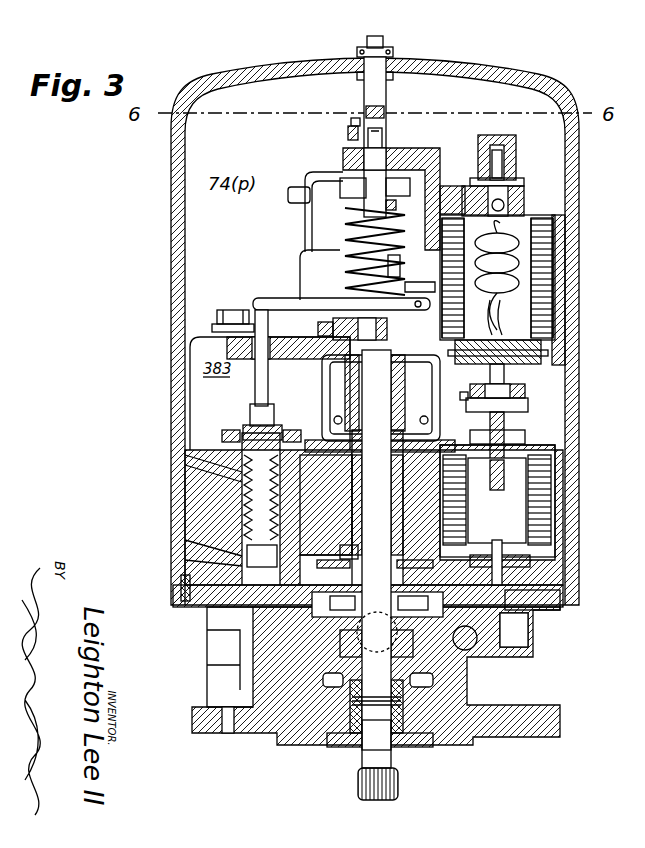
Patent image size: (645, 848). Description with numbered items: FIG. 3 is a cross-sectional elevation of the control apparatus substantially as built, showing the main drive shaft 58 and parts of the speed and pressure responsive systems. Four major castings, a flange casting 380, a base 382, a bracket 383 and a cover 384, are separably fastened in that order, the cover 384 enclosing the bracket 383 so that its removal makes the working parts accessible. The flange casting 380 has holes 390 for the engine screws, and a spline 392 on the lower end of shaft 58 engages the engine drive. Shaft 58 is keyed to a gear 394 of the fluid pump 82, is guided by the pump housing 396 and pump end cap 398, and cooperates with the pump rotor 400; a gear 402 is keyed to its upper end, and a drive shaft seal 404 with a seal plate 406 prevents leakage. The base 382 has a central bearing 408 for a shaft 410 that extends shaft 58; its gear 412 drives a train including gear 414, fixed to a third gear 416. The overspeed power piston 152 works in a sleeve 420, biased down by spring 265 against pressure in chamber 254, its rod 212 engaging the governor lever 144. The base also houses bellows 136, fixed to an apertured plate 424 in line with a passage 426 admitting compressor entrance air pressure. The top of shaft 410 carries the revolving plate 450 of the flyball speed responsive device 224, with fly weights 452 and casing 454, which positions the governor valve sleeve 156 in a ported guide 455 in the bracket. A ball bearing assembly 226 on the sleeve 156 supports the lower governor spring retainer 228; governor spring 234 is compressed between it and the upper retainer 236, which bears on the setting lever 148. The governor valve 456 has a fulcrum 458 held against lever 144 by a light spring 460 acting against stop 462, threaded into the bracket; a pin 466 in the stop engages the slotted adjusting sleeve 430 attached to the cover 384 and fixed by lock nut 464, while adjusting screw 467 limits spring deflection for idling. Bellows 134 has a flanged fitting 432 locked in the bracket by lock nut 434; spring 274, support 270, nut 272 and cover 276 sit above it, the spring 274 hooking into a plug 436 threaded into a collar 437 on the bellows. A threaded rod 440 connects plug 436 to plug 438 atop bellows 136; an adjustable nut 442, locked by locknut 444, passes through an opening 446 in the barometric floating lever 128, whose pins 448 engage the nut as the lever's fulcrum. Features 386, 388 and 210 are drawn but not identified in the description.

The cover 384 is at (176, 279).
The shell flange 386 is at (180, 600).
The lock nut 464 is at (393, 48).
The adjusting sleeve 430 is at (386, 104).
The pin 466 is at (388, 142).
The adjusting screw 467 is at (349, 133).
The bracket 383 is at (318, 240).
The setting lever 148 is at (353, 188).
The upper governor spring retainer 236 is at (391, 212).
The stop 462 is at (393, 229).
The light spring 460 is at (352, 262).
The fulcrum 458 is at (312, 275).
The governor lever 144 is at (355, 309).
The lower governor spring retainer 228 is at (391, 300).
The governor spring 234 is at (396, 279).
The governor valve sleeve 156 is at (365, 336).
The ball bearing assembly 226 is at (330, 328).
The rod 212 is at (253, 395).
The housing 210 is at (270, 393).
The casing 454 is at (257, 400).
The ported guide 455 is at (273, 406).
The fly weights 452 is at (279, 422).
The revolving plate 450 is at (305, 428).
The governor valve 456 is at (408, 378).
The barometric floating lever 128 is at (414, 430).
The cover 276 is at (511, 146).
The nut 272 is at (503, 168).
The support 270 is at (510, 184).
The lock nut 434 is at (526, 197).
The spring 274 is at (540, 286).
The flanged fitting 432 is at (492, 275).
The bellows 134 is at (449, 315).
The collar 437 is at (545, 361).
The plug 436 is at (486, 378).
The threaded rod 440 is at (505, 381).
The locknut 444 is at (533, 393).
The pins 448 is at (529, 407).
The adjustable nut 442 is at (535, 413).
The plug 438 is at (520, 446).
The opening 446 is at (486, 435).
The base 382 is at (185, 497).
The sleeve 420 is at (185, 480).
The passage 388 is at (185, 447).
The spring 265 is at (185, 463).
The chamber 254 is at (180, 539).
The flyball speed responsive device 224 is at (338, 483).
The bearing 408 is at (356, 515).
The overspeed power piston 152 is at (272, 566).
The third gear 416 is at (340, 555).
The bellows 136 is at (455, 521).
The apertured plate 424 is at (530, 563).
The gear 412 is at (356, 579).
The gear 414 is at (398, 578).
The flange casting 380 is at (312, 715).
The holes 390 is at (230, 735).
The fluid pump 82 is at (289, 660).
The gear 402 is at (505, 615).
The passage 426 is at (524, 641).
The shaft 410 is at (376, 559).
The rotor 400 is at (452, 640).
The pump housing 396 is at (470, 652).
The gear 394 is at (450, 670).
The pump end cap 398 is at (440, 676).
The main drive shaft 58 is at (387, 739).
The drive shaft seal 404 is at (433, 742).
The seal plate 406 is at (402, 752).
The spline 392 is at (398, 798).